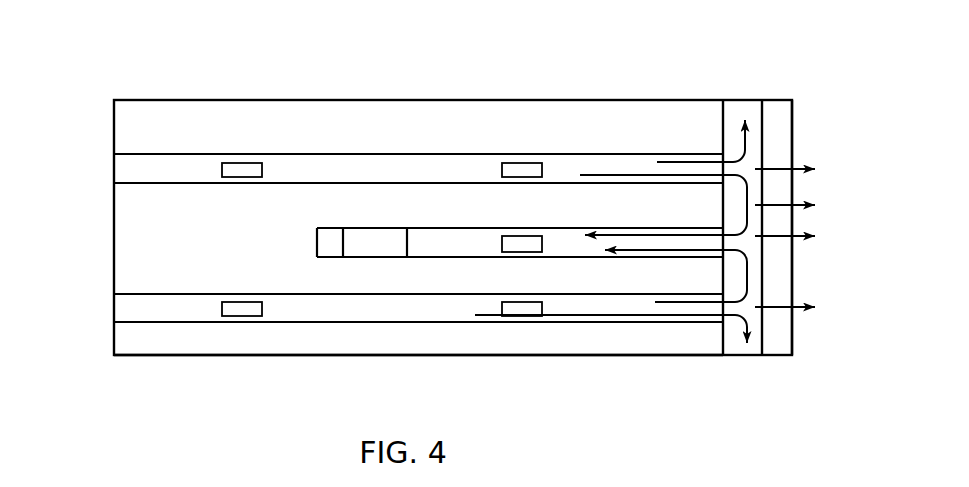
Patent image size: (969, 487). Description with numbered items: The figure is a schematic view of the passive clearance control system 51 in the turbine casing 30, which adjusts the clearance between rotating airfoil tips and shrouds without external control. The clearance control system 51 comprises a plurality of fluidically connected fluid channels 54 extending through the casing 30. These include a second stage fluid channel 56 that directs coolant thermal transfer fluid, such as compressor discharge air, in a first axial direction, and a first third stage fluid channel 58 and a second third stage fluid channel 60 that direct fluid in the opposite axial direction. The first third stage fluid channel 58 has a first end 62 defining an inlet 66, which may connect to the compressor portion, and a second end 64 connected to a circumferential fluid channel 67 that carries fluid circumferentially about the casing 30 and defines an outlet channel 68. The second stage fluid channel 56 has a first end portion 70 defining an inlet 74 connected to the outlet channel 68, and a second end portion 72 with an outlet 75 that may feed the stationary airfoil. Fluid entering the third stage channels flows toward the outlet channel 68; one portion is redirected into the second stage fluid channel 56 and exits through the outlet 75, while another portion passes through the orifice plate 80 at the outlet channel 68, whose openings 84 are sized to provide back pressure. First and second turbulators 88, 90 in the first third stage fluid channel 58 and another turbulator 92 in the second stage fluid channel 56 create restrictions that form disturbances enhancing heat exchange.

The casing 30 is at (806, 86).
The clearance control system 51 is at (80, 130).
The fluid channels 54 is at (127, 336).
The second stage fluid channel 56 is at (428, 270).
The first third stage fluid channel 58 is at (278, 337).
The second third stage fluid channel 60 is at (175, 130).
The first end 62 is at (133, 320).
The second end 64 is at (700, 302).
The inlet 66 is at (82, 333).
The circumferential fluid channel 67 is at (753, 355).
The outlet channel 68 is at (735, 110).
The first end portion 70 is at (688, 242).
The second end portion 72 is at (325, 228).
The inlet 74 is at (752, 250).
The outlet 75 is at (393, 258).
The orifice plate 80 is at (805, 328).
The openings 84 is at (800, 306).
The first turbulator 88 is at (243, 318).
The second turbulator 90 is at (523, 317).
The turbulator 92 is at (570, 231).